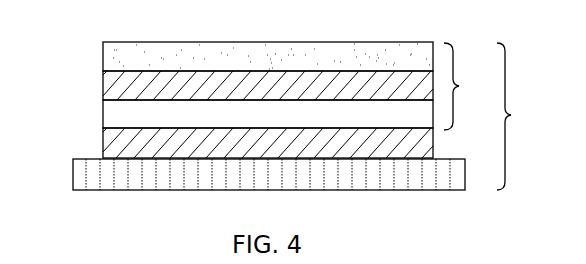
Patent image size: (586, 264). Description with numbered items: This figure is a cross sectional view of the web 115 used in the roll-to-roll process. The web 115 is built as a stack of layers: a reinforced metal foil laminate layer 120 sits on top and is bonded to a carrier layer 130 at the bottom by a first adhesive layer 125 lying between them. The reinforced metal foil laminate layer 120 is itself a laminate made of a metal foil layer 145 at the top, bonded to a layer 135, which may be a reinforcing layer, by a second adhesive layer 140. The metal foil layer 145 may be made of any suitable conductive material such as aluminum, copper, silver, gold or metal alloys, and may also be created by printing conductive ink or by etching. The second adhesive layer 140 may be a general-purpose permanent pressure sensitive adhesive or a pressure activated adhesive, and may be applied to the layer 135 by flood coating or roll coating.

The web 115 is at (521, 116).
The reinforced metal foil laminate layer 120 is at (467, 86).
The first adhesive layer 125 is at (103, 145).
The carrier layer 130 is at (80, 178).
The layer 135 is at (103, 114).
The second adhesive layer 140 is at (103, 85).
The metal foil layer 145 is at (103, 56).